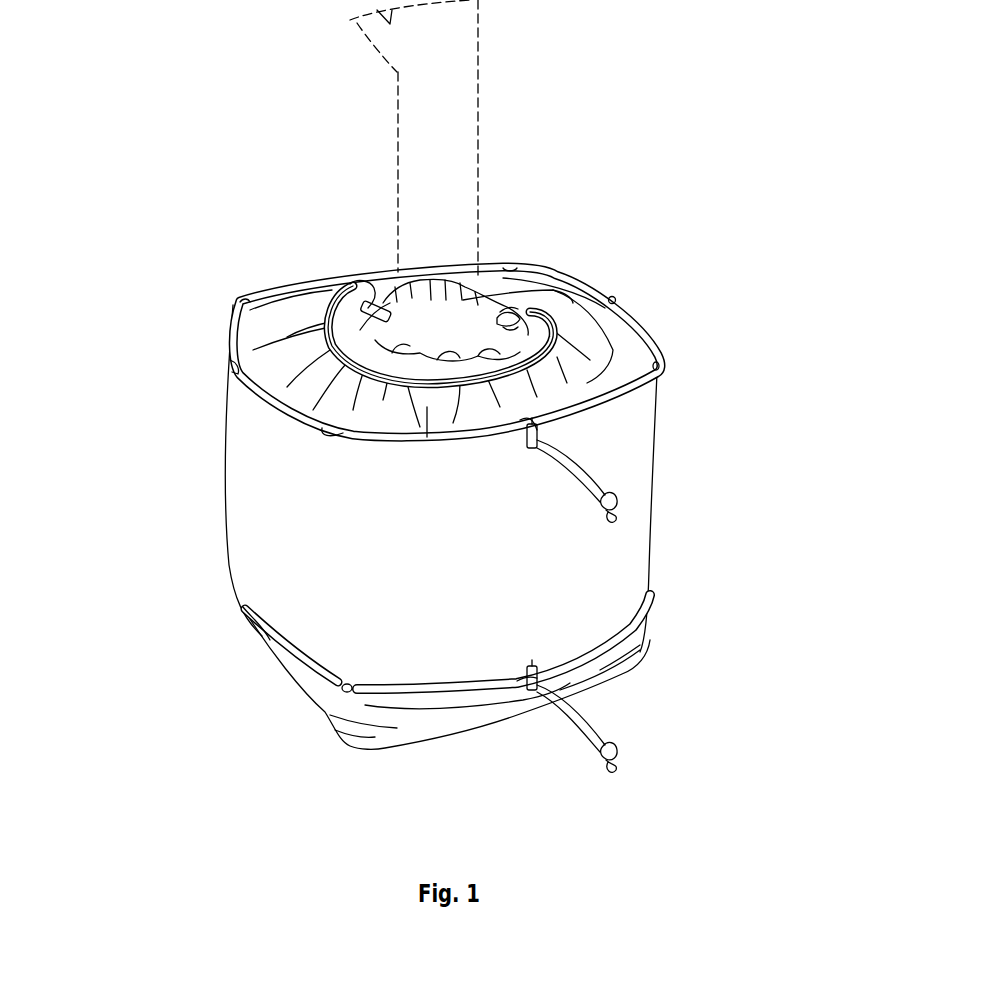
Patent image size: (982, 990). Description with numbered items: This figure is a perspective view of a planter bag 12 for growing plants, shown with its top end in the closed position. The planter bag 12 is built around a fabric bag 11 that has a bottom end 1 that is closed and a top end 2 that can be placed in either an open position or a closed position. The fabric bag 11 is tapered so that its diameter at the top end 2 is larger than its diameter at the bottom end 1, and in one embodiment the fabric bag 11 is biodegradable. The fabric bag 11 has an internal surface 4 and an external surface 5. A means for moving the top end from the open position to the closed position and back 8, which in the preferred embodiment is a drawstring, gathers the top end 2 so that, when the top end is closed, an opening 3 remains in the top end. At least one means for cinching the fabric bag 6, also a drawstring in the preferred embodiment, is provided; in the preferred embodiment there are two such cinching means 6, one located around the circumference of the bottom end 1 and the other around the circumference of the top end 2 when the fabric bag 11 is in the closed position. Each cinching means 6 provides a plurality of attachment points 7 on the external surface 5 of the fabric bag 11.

The bottom end 1 is at (506, 773).
The top end 2 is at (592, 350).
The opening 3 is at (423, 318).
The internal surface 4 is at (238, 500).
The external surface 5 is at (227, 507).
The means for cinching the fabric bag 6 is at (610, 397).
The attachment points 7 is at (508, 266).
The means for moving the top end between open and closed positions 8 is at (338, 341).
The fabric bag 11 is at (317, 592).
The planter bag 12 is at (205, 181).